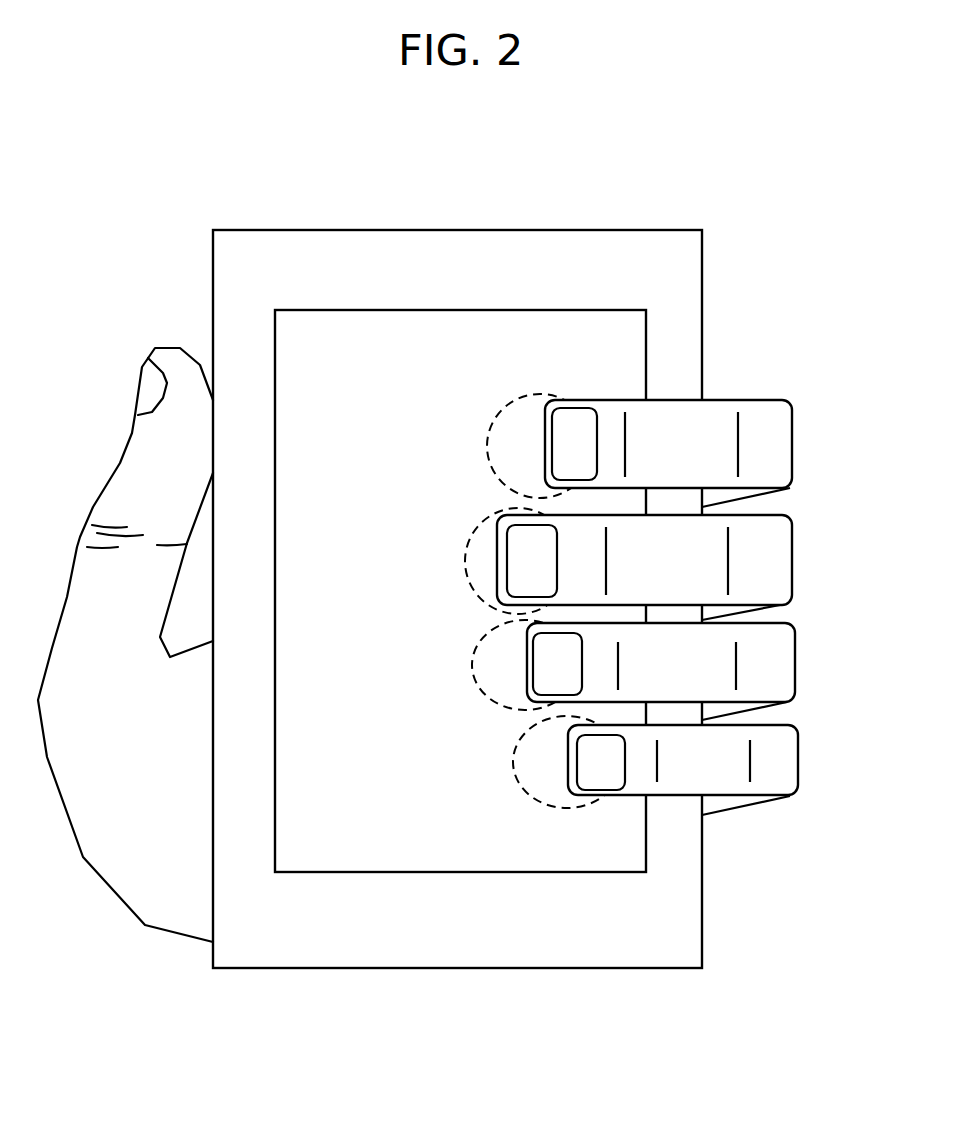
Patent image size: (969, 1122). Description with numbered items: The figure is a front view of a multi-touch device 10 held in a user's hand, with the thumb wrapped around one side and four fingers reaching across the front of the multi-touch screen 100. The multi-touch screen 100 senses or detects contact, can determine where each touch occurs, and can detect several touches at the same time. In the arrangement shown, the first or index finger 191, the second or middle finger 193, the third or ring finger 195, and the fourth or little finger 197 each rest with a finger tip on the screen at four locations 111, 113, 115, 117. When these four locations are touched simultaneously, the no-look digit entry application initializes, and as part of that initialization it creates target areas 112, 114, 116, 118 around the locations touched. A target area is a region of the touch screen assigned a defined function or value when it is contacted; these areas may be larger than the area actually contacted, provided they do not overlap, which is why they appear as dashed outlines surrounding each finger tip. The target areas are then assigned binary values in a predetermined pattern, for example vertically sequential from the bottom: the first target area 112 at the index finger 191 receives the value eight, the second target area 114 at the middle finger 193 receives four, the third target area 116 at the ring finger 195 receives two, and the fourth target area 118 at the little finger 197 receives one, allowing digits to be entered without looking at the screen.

The multi-touch device 10 is at (702, 305).
The multi-touch screen 100 is at (522, 310).
The first location 111 is at (543, 427).
The first target area 112 is at (488, 437).
The second location 113 is at (497, 548).
The second target area 114 is at (465, 568).
The third location 115 is at (525, 653).
The third target area 116 is at (473, 673).
The fourth location 117 is at (570, 760).
The fourth target area 118 is at (517, 773).
The index finger 191 is at (730, 397).
The middle finger 193 is at (792, 535).
The ring finger 195 is at (792, 647).
The little finger 197 is at (792, 748).